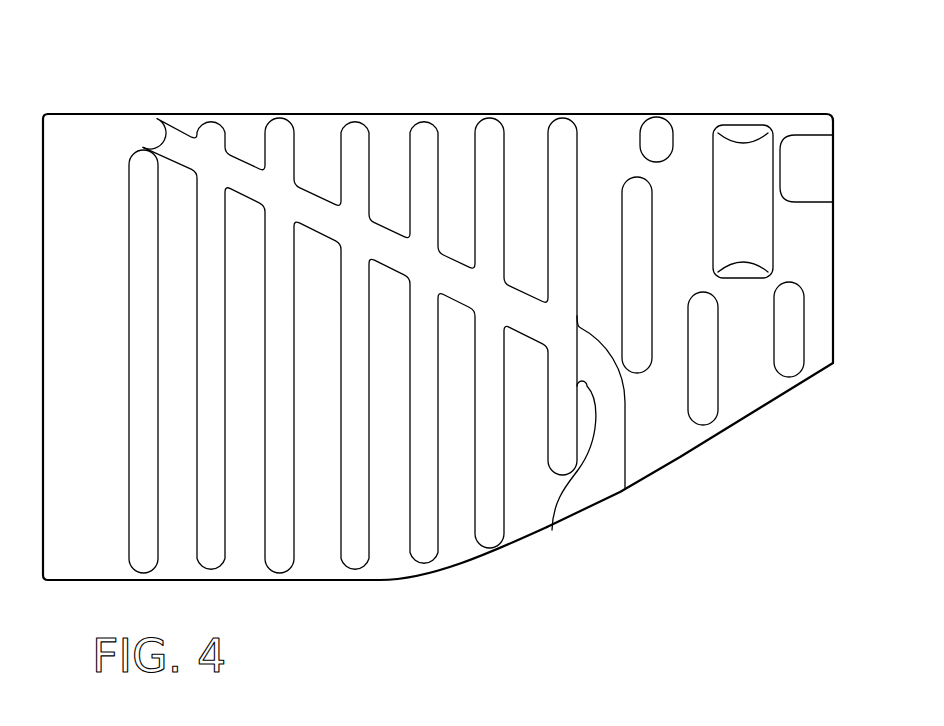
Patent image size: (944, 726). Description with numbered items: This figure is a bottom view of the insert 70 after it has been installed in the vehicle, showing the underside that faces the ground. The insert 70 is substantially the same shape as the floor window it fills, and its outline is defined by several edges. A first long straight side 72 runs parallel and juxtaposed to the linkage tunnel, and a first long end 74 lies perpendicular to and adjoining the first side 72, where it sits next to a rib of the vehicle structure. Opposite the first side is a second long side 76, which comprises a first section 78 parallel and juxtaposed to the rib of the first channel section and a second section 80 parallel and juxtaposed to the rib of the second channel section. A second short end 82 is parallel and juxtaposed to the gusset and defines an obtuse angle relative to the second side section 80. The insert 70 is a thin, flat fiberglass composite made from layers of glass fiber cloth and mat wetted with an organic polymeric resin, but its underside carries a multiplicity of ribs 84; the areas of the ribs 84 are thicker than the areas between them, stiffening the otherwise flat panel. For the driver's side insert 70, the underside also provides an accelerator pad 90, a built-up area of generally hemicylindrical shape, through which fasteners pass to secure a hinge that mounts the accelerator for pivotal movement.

The insert 70 is at (554, 100).
The first long straight side 72 is at (309, 113).
The first long end 74 is at (43, 450).
The second long side 76 is at (565, 570).
The first section 78 is at (317, 582).
The second section 80 is at (669, 462).
The second short end 82 is at (835, 245).
The ribs 84 is at (277, 418).
The accelerator pad 90 is at (752, 253).